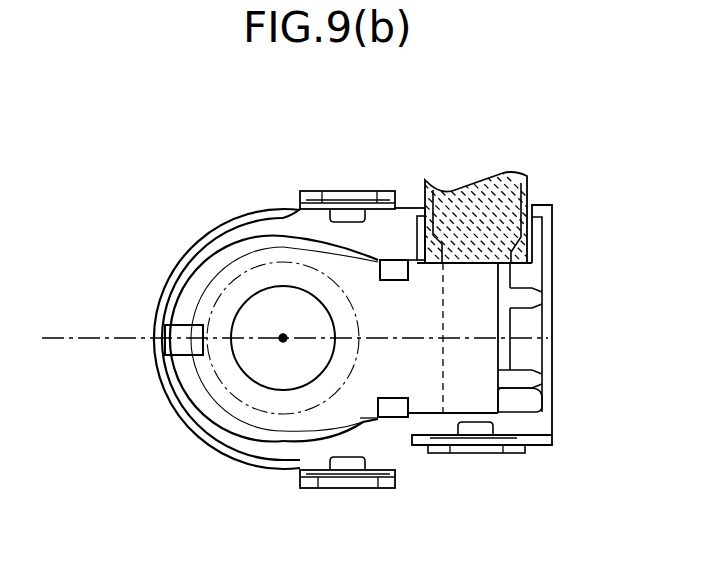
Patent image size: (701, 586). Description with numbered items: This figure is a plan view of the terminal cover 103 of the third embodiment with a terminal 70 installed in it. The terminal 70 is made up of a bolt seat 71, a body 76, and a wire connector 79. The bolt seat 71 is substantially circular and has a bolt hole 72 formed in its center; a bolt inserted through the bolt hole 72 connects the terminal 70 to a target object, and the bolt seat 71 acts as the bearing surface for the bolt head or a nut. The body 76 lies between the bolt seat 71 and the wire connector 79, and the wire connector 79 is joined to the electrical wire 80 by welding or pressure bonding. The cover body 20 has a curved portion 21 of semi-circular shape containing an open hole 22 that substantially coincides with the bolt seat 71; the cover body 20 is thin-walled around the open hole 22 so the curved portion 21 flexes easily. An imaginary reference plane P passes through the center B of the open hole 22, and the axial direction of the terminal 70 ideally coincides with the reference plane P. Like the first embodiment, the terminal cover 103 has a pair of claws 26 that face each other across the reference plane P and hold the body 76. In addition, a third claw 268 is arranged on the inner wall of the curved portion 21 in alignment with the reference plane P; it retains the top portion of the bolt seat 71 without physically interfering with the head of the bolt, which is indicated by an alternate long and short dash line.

The cover body 20 is at (200, 372).
The curved portion 21 is at (192, 420).
The open hole 22 is at (217, 433).
The claw 26 is at (395, 272).
The terminal 70 is at (312, 242).
The bolt seat 71 is at (265, 268).
The bolt hole 72 is at (250, 327).
The body 76 is at (403, 345).
The wire connector 79 is at (467, 310).
The electrical wire 80 is at (488, 190).
The terminal cover 103 is at (583, 185).
The third claw 268 is at (175, 357).
The center of the open hole B is at (283, 338).
The reference plane P is at (60, 338).